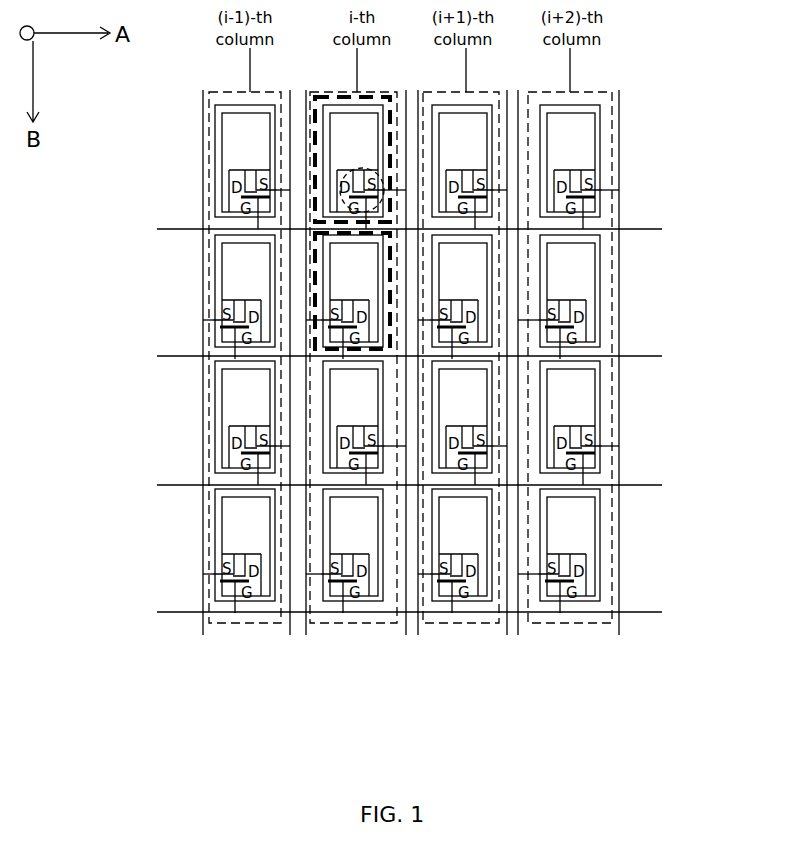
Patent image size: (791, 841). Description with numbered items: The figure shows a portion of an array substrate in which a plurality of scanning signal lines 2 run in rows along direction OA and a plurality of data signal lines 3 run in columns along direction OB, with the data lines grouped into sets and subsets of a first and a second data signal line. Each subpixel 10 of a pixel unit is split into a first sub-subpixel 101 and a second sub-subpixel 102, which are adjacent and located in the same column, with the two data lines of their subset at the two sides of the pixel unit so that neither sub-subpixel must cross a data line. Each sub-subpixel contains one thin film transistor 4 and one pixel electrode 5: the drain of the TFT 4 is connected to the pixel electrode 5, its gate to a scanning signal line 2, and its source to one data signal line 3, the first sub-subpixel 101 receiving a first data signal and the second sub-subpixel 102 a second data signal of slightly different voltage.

The scanning signal lines 2 is at (715, 225).
The data signal lines 3 is at (592, 662).
The thin film transistor 4 is at (335, 199).
The pixel electrode 5 is at (350, 134).
The subpixel 10 is at (95, 163).
The first sub-subpixel 101 is at (158, 128).
The second sub-subpixel 102 is at (312, 290).